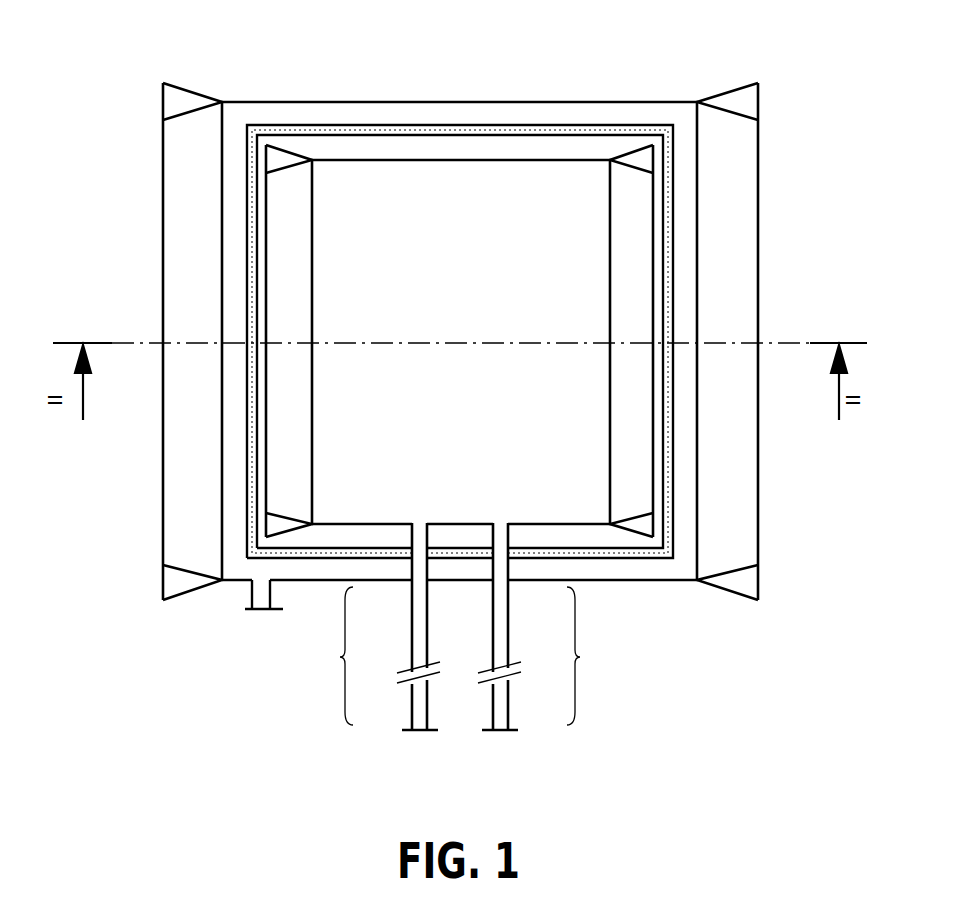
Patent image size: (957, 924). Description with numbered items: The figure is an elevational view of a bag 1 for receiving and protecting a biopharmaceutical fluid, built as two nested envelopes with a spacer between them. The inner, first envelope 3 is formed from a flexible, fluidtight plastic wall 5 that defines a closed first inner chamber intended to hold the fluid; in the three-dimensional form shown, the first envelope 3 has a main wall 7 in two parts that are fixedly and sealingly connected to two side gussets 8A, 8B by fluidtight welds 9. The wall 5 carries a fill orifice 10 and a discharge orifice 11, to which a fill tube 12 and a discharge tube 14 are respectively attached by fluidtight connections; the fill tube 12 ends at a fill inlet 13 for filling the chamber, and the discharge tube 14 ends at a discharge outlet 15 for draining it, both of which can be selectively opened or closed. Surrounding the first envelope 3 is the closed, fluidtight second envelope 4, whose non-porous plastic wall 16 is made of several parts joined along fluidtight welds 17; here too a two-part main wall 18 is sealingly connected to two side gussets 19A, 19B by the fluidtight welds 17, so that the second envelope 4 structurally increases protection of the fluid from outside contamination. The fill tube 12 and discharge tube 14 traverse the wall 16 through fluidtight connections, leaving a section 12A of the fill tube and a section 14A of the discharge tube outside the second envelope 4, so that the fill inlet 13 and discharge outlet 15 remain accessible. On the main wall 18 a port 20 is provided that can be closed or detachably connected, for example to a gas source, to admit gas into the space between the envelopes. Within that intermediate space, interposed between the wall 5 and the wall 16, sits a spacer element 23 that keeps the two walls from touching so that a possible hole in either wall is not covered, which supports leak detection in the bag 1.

The bag 1 is at (737, 63).
The first envelope 3 is at (380, 193).
The second envelope 4 is at (243, 113).
The wall 5 is at (555, 200).
The main wall 7 is at (498, 190).
The side gusset 8A is at (632, 208).
The side gusset 8B is at (288, 208).
The fluidtight welds 9 is at (452, 158).
The fill orifice 10 is at (416, 508).
The discharge orifice 11 is at (504, 508).
The fill tube 12 is at (417, 622).
The section of fill tube 12A is at (320, 656).
The fill inlet 13 is at (420, 733).
The discharge tube 14 is at (500, 620).
The section of discharge tube 14A is at (604, 656).
The discharge outlet 15 is at (500, 735).
The wall 16 is at (235, 127).
The fluidtight welds 17 is at (670, 103).
The main wall 18 is at (665, 573).
The side gusset 19A is at (720, 548).
The side gusset 19B is at (200, 548).
The port 20 is at (260, 608).
The spacer element 23 is at (667, 230).